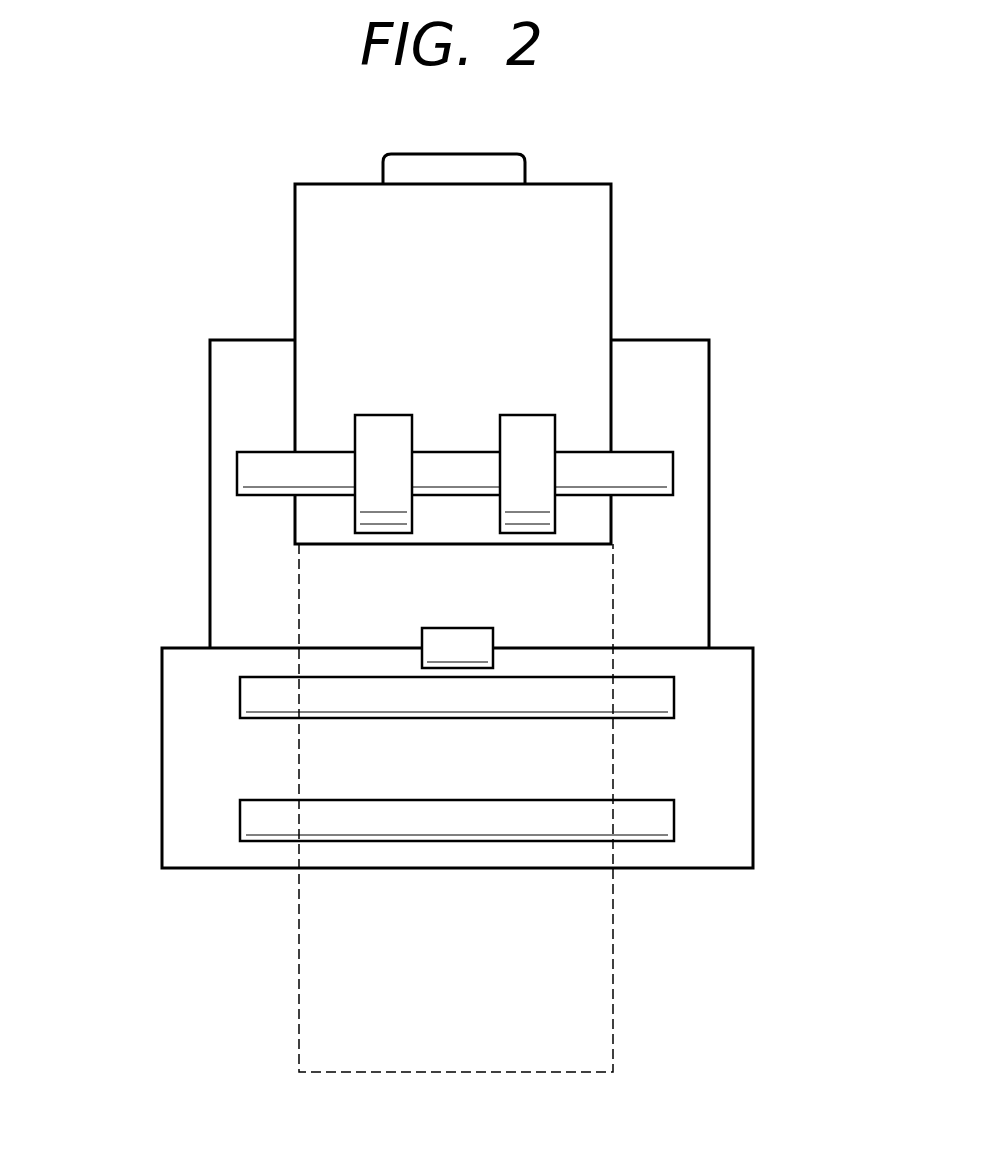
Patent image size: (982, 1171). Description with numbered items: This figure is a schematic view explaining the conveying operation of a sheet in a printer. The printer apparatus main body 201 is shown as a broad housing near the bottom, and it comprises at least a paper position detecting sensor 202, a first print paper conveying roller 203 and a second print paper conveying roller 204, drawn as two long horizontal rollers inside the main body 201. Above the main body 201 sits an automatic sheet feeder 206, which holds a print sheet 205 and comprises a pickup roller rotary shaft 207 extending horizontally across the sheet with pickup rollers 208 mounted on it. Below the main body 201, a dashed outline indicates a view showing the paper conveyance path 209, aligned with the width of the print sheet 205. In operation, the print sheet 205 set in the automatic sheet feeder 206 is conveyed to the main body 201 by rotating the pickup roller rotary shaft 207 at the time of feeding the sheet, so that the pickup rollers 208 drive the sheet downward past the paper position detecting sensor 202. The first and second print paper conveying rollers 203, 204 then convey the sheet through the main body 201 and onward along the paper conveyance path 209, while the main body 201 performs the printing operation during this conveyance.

The printer apparatus main body 201 is at (173, 799).
The paper position detecting sensor 202 is at (440, 643).
The first print paper conveying roller 203 is at (662, 697).
The second print paper conveying roller 204 is at (663, 822).
The print sheet 205 is at (592, 232).
The automatic sheet feeder 206 is at (693, 390).
The pickup roller rotary shaft 207 is at (658, 468).
The pickup rollers 208 is at (530, 428).
The paper conveyance path 209 is at (613, 1002).